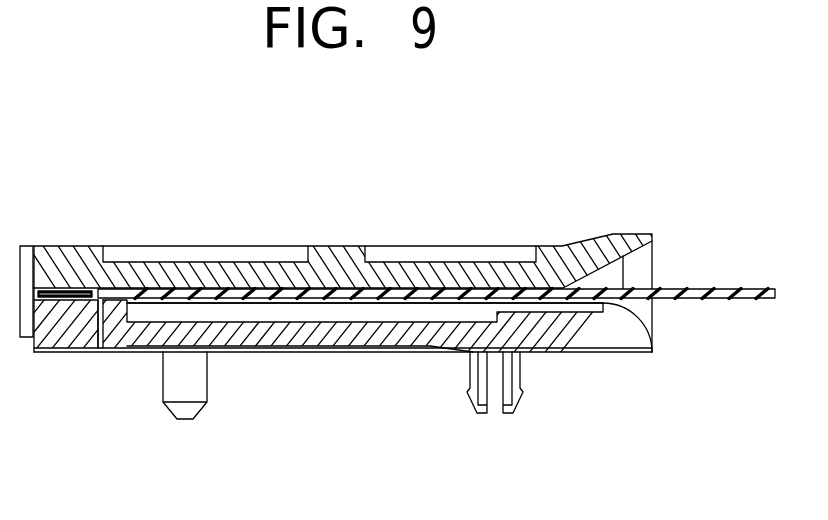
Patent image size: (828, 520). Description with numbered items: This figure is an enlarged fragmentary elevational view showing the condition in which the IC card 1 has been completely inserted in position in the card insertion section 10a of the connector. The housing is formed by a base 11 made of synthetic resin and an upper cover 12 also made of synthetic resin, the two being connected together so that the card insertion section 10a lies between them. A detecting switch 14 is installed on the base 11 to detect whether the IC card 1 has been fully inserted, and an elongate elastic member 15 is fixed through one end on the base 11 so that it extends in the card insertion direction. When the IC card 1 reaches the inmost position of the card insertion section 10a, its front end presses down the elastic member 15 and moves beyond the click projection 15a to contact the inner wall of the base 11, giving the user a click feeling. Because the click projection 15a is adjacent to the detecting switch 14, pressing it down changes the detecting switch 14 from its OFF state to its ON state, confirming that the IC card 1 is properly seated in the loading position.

The IC card 1 is at (742, 297).
The card insertion section 10a is at (610, 274).
The base 11 is at (62, 333).
The upper cover 12 is at (262, 268).
The detecting switch 14 is at (70, 292).
The elastic member 15 is at (336, 330).
The click projection 15a is at (119, 320).